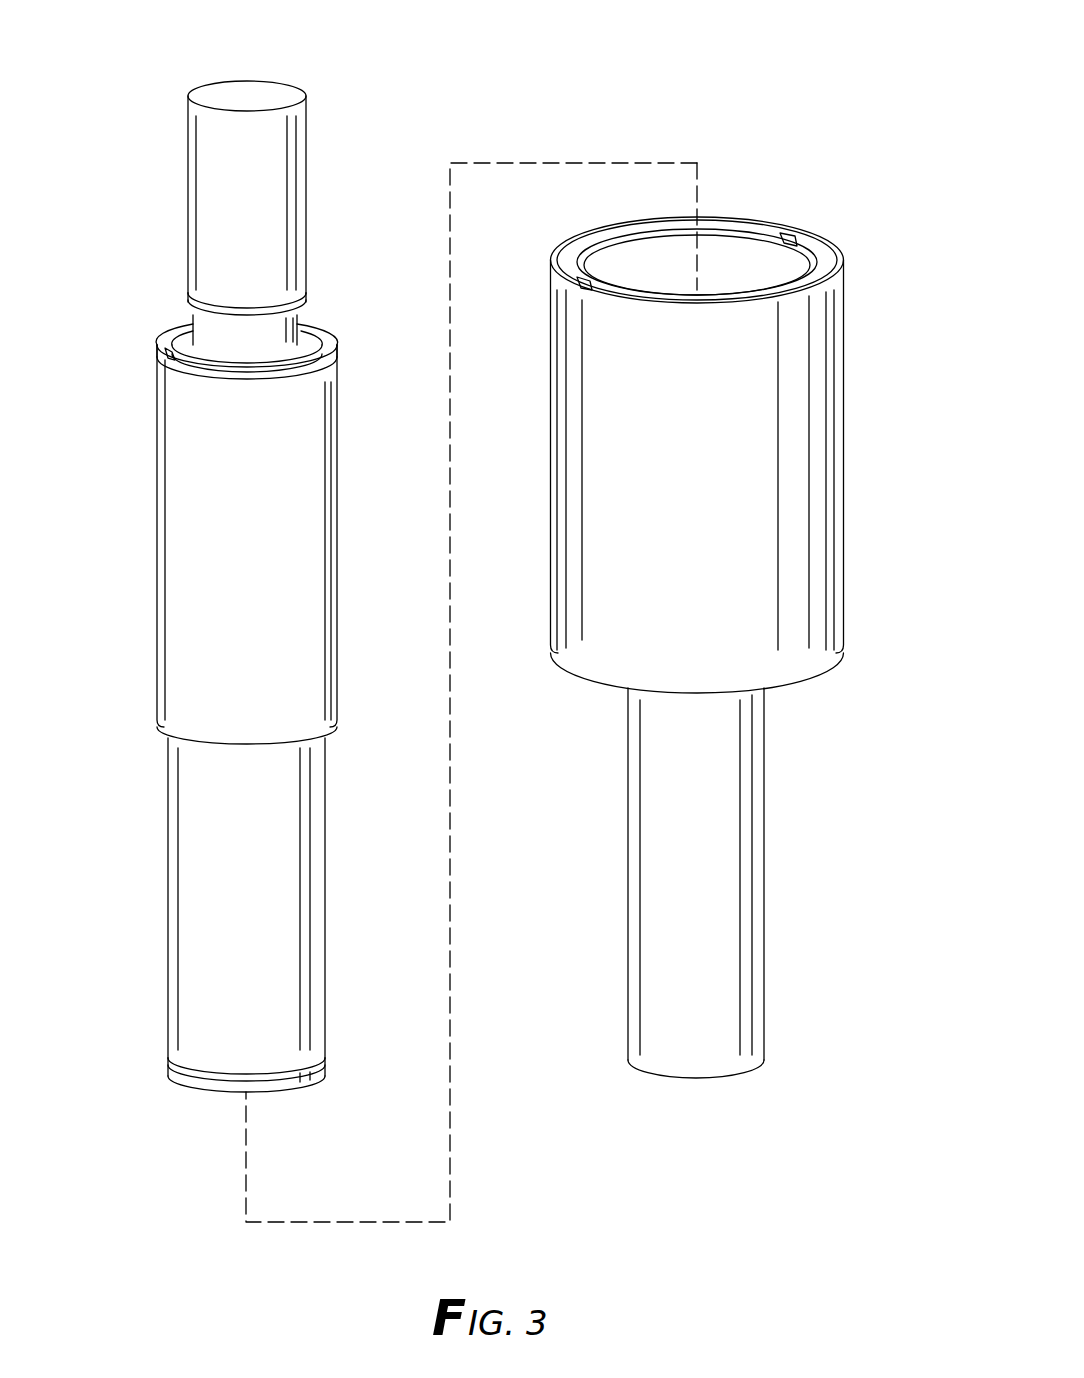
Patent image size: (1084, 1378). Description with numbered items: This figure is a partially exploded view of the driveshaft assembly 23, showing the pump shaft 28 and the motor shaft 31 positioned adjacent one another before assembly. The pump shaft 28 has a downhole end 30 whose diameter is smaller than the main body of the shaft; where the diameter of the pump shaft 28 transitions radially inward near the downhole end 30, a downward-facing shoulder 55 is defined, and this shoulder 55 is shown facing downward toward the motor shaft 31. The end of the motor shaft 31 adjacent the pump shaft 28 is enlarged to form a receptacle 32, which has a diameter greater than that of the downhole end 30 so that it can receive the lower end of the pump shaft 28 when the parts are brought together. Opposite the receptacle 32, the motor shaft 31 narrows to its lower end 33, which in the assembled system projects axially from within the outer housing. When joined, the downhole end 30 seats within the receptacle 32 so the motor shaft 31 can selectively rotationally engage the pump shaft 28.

The driveshaft assembly 23 is at (118, 75).
The pump shaft 28 is at (140, 690).
The downhole end 30 is at (178, 1002).
The downward-facing shoulder 55 is at (228, 742).
The motor shaft 31 is at (876, 606).
The receptacle 32 is at (735, 265).
The lower end 33 is at (776, 745).